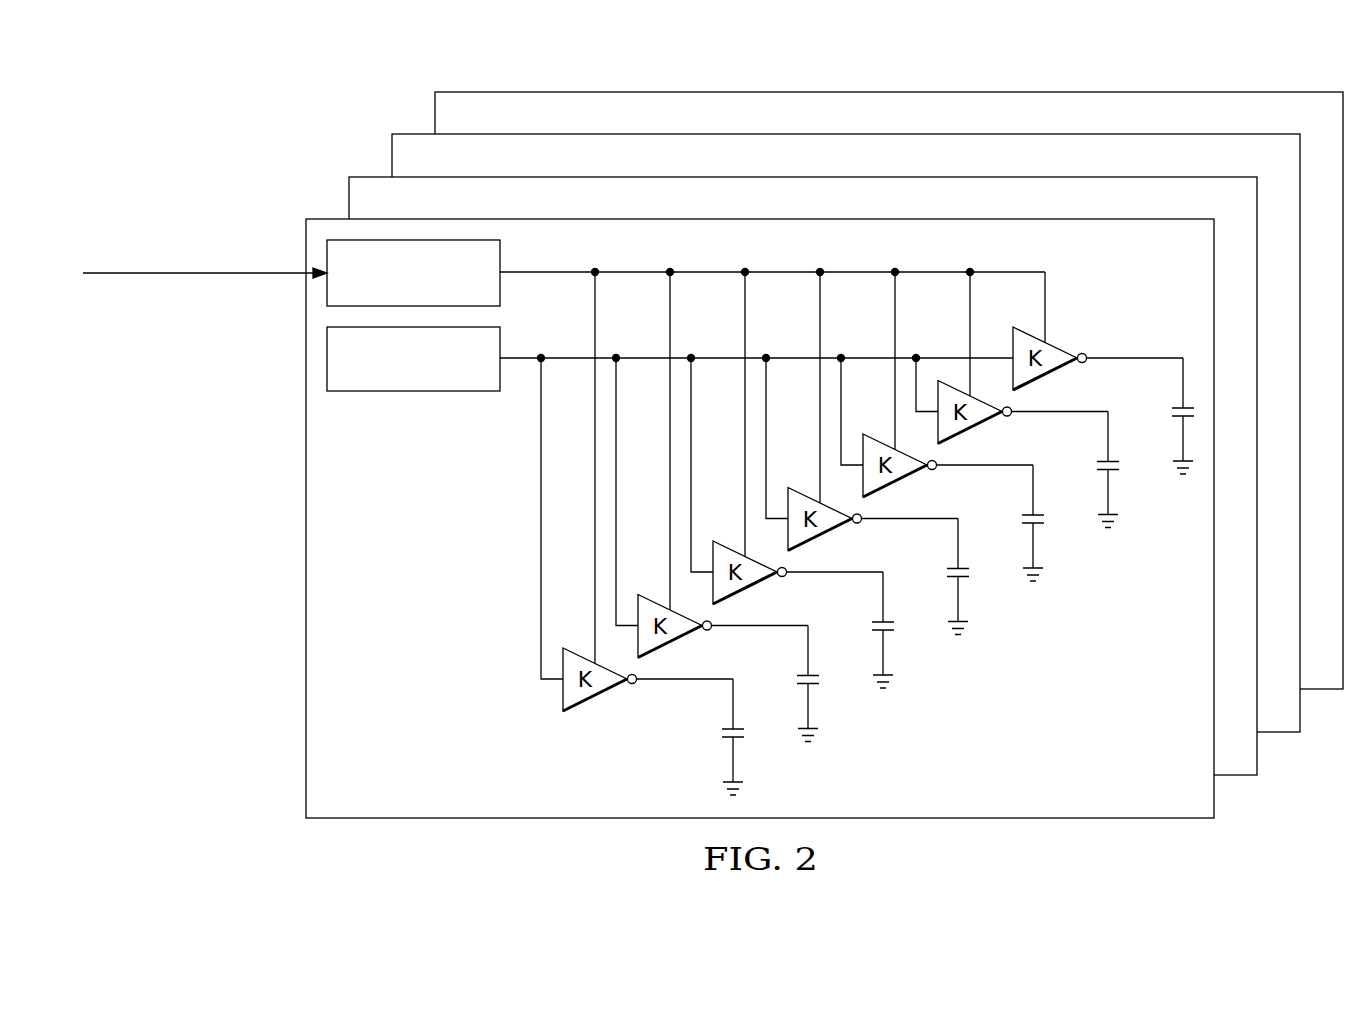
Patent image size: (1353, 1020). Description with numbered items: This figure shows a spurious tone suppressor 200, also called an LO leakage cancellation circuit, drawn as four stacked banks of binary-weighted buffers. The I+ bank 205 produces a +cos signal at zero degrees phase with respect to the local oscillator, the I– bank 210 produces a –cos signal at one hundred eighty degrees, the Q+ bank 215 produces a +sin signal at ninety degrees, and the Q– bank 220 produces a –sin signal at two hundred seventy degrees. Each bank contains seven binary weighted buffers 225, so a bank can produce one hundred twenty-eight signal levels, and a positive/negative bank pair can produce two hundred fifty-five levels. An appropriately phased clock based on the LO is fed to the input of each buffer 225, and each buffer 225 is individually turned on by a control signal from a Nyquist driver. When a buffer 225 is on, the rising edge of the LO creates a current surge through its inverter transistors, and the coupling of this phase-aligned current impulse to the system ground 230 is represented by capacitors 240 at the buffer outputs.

The spurious tone suppressor 200 is at (455, 53).
The I+ bank 205 is at (304, 667).
The I– bank 210 is at (347, 197).
The Q+ bank 215 is at (390, 154).
The Q– bank 220 is at (432, 111).
The binary weighted buffer 225 is at (596, 700).
The system ground 230 is at (894, 678).
The capacitor 240 is at (721, 733).